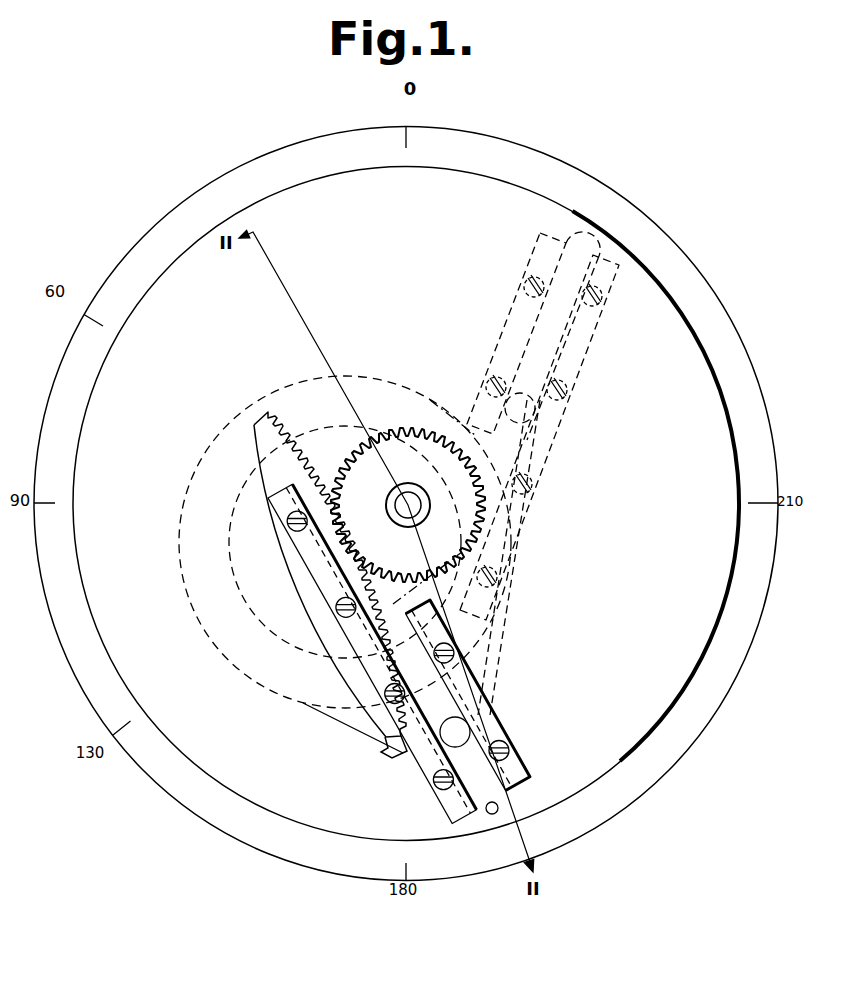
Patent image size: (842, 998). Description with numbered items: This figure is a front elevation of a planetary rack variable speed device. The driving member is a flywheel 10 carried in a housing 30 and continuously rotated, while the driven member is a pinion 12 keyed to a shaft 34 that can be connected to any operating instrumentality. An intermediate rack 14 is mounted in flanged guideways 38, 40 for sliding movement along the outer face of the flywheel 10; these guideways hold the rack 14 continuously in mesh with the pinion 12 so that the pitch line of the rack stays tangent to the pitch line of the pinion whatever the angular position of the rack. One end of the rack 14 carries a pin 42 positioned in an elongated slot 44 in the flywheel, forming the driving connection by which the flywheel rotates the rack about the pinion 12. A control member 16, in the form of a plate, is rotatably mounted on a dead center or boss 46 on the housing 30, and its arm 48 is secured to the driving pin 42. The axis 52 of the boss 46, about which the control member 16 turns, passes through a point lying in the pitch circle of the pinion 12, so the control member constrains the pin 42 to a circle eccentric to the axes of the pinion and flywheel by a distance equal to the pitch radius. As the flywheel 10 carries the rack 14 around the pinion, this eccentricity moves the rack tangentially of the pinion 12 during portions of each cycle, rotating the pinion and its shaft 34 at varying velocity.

The flywheel 10 is at (207, 253).
The pinion 12 is at (357, 452).
The rack 14 is at (266, 432).
The control member 16 is at (243, 675).
The housing 30 is at (587, 192).
The shaft 34 is at (410, 497).
The flanged guideway 38 is at (458, 803).
The flanged guideway 40 is at (467, 690).
The pin 42 is at (457, 732).
The elongated slot 44 is at (493, 814).
The boss 46 is at (187, 490).
The arm 48 is at (363, 723).
The axis 52 is at (346, 540).